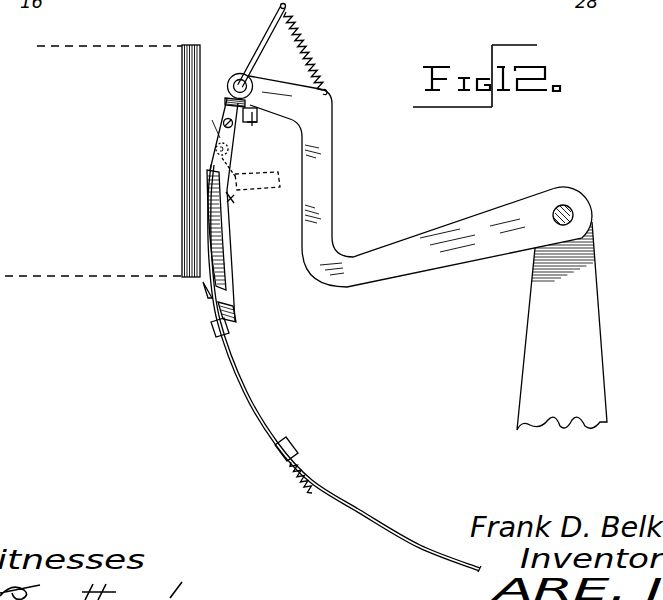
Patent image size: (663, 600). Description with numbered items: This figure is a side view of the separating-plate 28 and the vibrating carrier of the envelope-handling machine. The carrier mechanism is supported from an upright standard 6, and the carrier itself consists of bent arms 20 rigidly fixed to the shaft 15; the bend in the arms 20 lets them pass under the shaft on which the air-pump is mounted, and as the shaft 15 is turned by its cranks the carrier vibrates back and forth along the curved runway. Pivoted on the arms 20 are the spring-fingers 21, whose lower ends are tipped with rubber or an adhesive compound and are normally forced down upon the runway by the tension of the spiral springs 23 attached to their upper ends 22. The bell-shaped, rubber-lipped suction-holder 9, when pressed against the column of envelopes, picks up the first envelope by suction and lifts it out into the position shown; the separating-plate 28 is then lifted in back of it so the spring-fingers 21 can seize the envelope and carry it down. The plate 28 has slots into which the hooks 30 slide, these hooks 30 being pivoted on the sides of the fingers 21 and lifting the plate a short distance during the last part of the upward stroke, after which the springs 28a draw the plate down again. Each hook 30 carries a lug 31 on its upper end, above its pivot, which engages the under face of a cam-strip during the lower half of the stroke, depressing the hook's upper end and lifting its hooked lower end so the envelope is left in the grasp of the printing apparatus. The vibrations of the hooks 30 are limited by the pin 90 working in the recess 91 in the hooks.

The upper ends of the fingers 22 is at (257, 48).
The spiral springs 23 is at (317, 53).
The arms of the vibrating carrier 20 is at (326, 191).
The shaft 15 is at (575, 214).
The upright standard 6 is at (562, 326).
The recess 91 is at (225, 105).
The lug 31 is at (250, 135).
The pin 90 is at (229, 150).
The suction-holder 9 is at (253, 247).
The hook 30 is at (222, 291).
The spring-finger 21 is at (234, 314).
The separating-plate 28 is at (344, 368).
The springs 28a is at (312, 493).